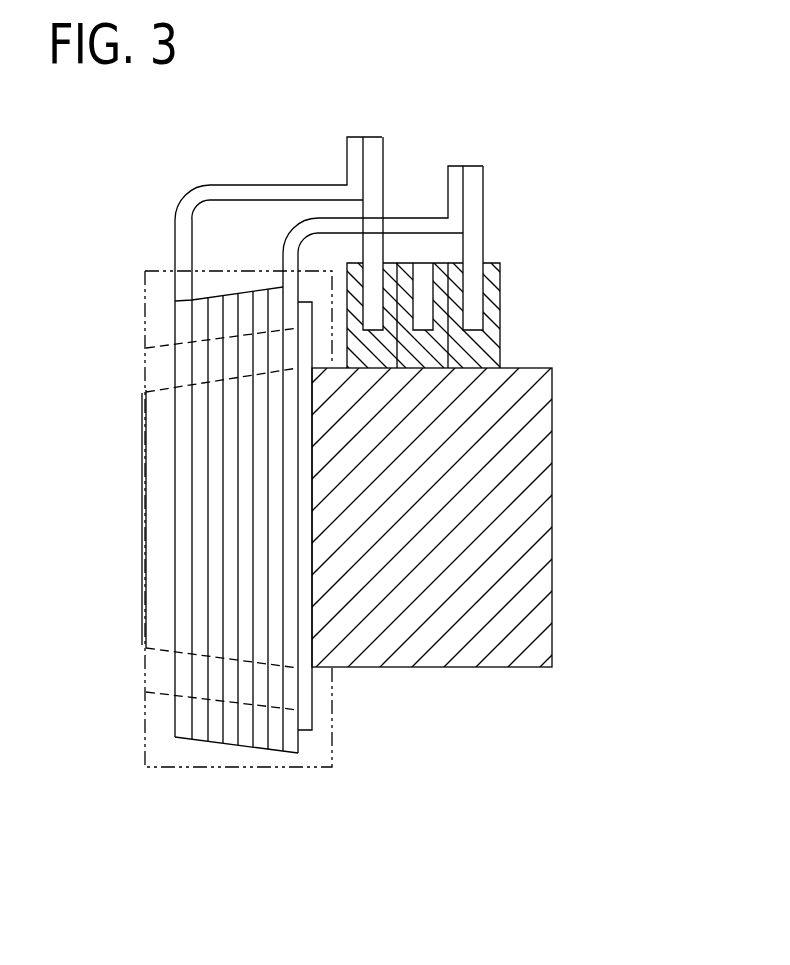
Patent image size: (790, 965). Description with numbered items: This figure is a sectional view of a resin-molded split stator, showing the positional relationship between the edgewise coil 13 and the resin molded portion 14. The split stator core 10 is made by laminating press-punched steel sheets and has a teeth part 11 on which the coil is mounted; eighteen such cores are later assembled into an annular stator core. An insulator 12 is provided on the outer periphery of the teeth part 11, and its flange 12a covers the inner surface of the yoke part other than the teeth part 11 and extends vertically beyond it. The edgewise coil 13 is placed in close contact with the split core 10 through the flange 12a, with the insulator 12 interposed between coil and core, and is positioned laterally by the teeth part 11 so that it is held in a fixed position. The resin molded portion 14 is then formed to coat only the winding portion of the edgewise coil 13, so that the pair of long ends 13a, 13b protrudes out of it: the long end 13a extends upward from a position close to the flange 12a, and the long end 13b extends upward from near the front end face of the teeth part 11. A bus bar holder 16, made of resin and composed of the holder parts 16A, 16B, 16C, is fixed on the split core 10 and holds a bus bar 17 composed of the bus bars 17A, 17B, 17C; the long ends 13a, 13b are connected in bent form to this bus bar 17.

The split stator core 10 is at (543, 546).
The teeth part 11 is at (144, 523).
The insulator 12 is at (150, 471).
The flange 12a is at (305, 732).
The edgewise coil 13 is at (182, 598).
The long end 13a is at (405, 222).
The long end 13b is at (275, 192).
The resin molded portion 14 is at (153, 270).
The bus bar holder 16 is at (452, 325).
The bus bar holder 16A is at (495, 302).
The bus bar holder 16B is at (420, 347).
The bus bar holder 16C is at (380, 370).
The bus bar 17 is at (511, 228).
The bus bar 17A is at (473, 298).
The bus bar 17B is at (420, 303).
The bus bar 17C is at (373, 300).